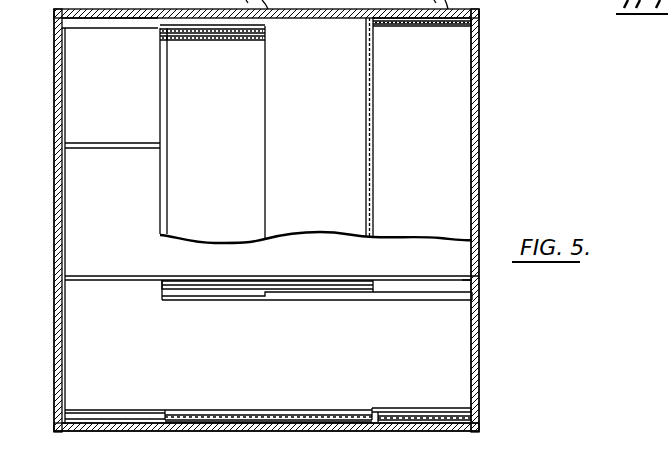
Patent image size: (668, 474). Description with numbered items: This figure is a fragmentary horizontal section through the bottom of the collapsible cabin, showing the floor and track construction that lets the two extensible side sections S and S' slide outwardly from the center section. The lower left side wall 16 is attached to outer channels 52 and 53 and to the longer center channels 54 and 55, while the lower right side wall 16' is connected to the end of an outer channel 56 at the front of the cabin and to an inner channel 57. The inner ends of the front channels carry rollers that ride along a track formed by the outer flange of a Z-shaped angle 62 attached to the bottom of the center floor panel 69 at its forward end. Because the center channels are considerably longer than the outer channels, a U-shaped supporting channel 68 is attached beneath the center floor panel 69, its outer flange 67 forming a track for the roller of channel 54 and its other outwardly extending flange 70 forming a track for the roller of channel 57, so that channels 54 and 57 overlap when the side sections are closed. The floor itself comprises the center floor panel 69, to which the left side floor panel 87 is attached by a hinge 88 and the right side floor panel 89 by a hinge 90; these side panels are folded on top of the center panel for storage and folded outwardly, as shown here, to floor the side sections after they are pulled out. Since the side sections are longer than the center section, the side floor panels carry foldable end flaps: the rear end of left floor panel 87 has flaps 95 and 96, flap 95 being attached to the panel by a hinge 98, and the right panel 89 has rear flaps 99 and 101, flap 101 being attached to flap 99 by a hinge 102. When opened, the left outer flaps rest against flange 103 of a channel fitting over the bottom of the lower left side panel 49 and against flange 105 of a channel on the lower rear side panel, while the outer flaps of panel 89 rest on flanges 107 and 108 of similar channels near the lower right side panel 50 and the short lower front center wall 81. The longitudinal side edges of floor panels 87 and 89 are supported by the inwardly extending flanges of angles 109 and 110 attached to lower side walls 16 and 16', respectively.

The lower left side wall 16 is at (36, 220).
The lower right side wall 16' is at (499, 220).
The left side section S is at (31, 220).
The right side section S' is at (504, 220).
The lower left side panel 49 is at (122, 430).
The lower right side panel 50 is at (452, 431).
The outer channel 52 is at (88, 410).
The outer channel 53 is at (103, 30).
The center channel 54 is at (114, 279).
The center channel 55 is at (149, 146).
The outer channel 56 is at (400, 410).
The inner channel 57 is at (378, 298).
The Z-shaped angle 62 is at (280, 410).
The outer flange 67 is at (310, 280).
The U-shaped supporting channel 68 is at (172, 289).
The center floor panel 69 is at (322, 182).
The outwardly extending flange 70 is at (247, 300).
The lower front center wall 81 is at (292, 424).
The left side floor panel 87 is at (254, 103).
The hinge 88 is at (160, 123).
The right side floor panel 89 is at (459, 122).
The hinge 90 is at (373, 152).
The rear flap 95 is at (263, 27).
The rear flap 96 is at (263, 40).
The hinge 98 is at (210, 32).
The rear flap 99 is at (475, 9).
The rear flap 101 is at (474, 27).
The hinge 102 is at (432, 22).
The flange 103 is at (170, 398).
The flange 105 is at (80, 18).
The flange 107 is at (438, 416).
The flange 108 is at (410, 22).
The angle 109 is at (66, 217).
The angle 110 is at (470, 268).